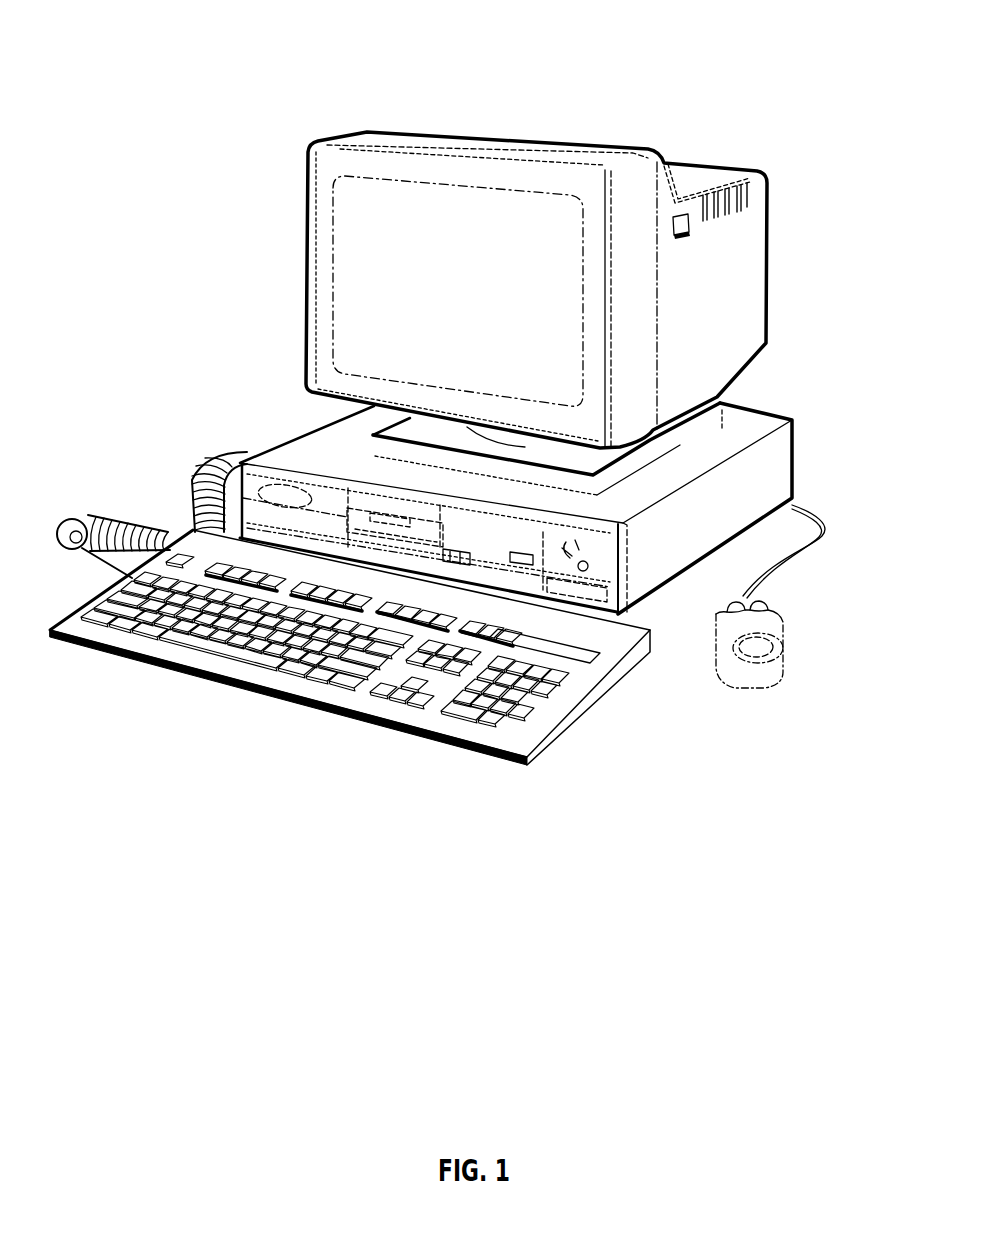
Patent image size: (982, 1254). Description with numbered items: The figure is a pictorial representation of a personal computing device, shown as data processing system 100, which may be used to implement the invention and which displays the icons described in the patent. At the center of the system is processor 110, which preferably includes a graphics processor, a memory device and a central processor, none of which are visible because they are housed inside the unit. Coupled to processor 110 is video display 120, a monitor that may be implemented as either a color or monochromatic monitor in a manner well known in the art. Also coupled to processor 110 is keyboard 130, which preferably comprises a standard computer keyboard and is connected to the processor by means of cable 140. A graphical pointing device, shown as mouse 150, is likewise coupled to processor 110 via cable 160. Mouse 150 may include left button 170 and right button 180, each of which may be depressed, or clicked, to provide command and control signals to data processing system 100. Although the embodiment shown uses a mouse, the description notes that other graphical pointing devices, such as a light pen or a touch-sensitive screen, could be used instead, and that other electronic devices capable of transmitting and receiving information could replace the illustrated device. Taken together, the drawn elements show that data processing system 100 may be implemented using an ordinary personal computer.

The data processing system 100 is at (648, 104).
The processor 110 is at (783, 452).
The video display 120 is at (482, 303).
The keyboard 130 is at (350, 659).
The cable 140 is at (152, 501).
The mouse 150 is at (765, 668).
The cable 160 is at (815, 551).
The left button 170 is at (725, 610).
The right button 180 is at (804, 627).